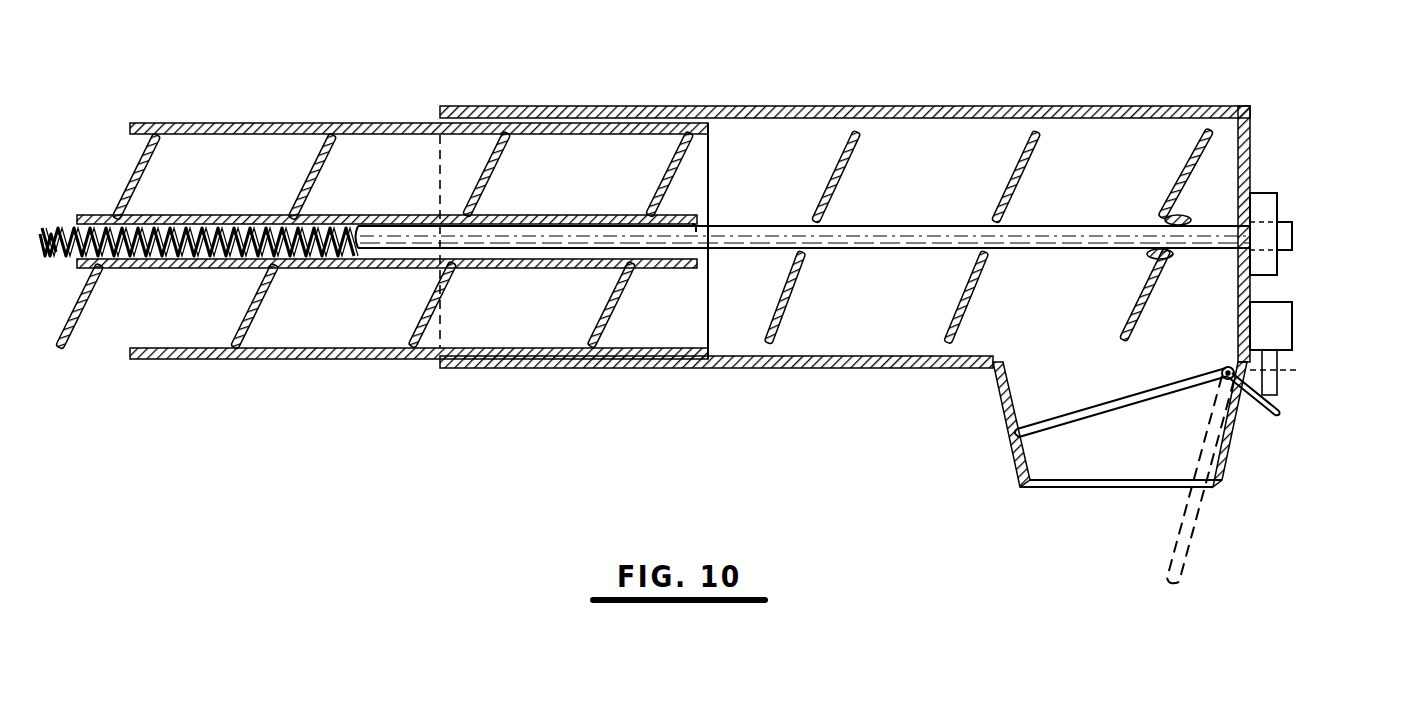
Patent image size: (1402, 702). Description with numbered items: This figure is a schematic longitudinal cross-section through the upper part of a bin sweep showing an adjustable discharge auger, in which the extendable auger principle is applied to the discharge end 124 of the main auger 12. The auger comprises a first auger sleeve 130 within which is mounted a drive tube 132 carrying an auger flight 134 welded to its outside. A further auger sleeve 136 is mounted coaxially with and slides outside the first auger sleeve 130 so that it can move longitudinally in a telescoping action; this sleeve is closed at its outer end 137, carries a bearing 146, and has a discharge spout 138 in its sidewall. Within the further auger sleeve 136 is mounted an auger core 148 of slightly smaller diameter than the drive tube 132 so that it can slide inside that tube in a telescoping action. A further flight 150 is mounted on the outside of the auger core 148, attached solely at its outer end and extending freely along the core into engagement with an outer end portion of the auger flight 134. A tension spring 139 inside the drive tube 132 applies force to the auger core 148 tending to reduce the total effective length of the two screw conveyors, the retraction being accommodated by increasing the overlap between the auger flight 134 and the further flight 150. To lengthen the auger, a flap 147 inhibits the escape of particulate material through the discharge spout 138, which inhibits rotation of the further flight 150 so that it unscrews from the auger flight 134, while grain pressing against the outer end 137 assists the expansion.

The main auger 12 is at (317, 365).
The discharge end 124 is at (1182, 92).
The first auger sleeve 130 is at (264, 122).
The drive tube 132 is at (248, 216).
The auger flight 134 is at (89, 323).
The further auger sleeve 136 is at (768, 107).
The outer end 137 is at (1260, 298).
The discharge spout 138 is at (994, 420).
The tension spring 139 is at (50, 222).
The bearing 146 is at (1280, 200).
The flap 147 is at (1098, 420).
The auger core 148 is at (858, 226).
The further flight 150 is at (595, 288).